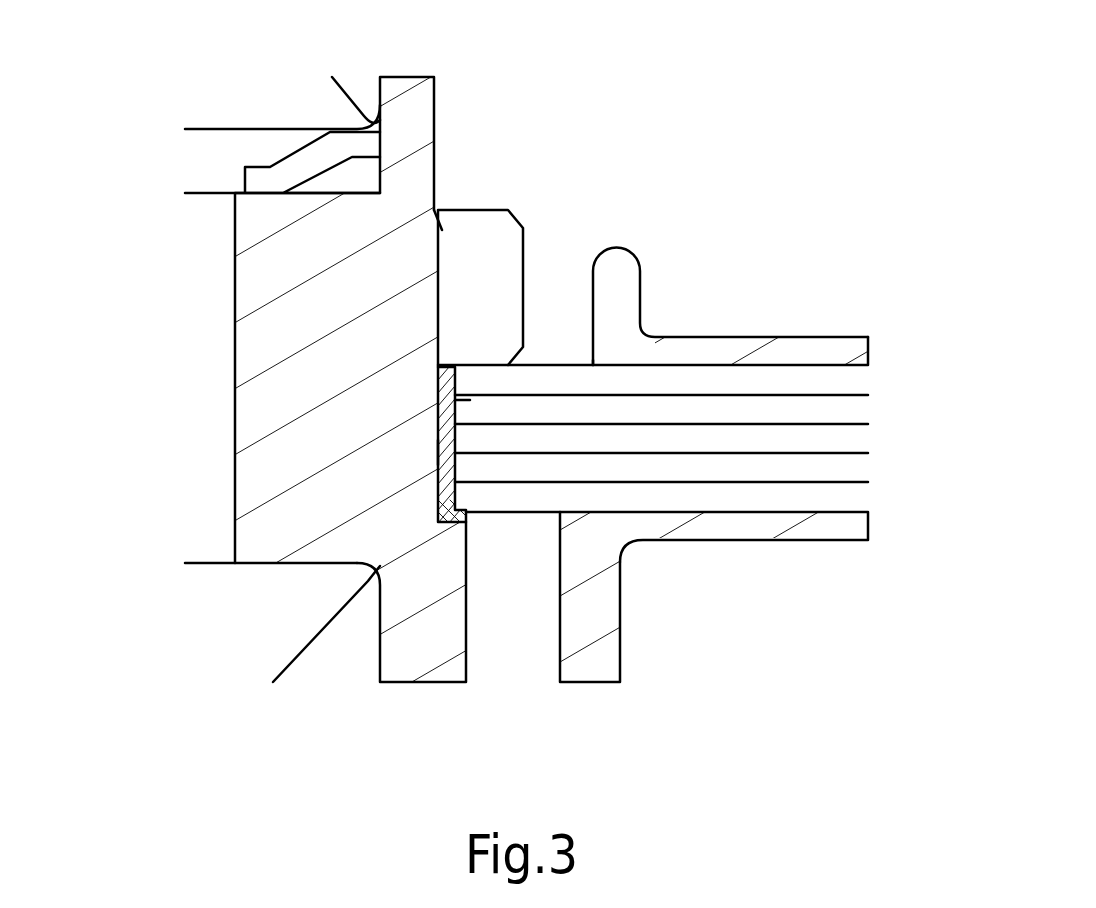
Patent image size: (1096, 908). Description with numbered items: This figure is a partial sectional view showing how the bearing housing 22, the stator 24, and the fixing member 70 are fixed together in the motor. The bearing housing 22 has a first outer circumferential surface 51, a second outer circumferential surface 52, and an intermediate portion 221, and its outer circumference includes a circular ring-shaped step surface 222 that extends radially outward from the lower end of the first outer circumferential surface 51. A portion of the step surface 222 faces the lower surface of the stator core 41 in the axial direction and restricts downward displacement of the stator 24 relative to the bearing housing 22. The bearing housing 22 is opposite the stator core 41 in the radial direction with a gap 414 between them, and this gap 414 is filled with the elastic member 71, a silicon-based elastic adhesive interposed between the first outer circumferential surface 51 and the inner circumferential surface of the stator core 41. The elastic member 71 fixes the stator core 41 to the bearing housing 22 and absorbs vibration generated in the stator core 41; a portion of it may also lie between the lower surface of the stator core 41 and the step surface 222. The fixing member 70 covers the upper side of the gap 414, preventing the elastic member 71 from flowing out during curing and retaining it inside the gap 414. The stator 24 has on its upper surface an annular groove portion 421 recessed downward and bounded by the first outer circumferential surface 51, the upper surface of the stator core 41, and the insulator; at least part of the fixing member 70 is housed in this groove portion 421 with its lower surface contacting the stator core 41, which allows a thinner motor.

The bearing housing 22 is at (423, 647).
The intermediate portion 221 is at (352, 345).
The step surface 222 is at (455, 508).
The stator 24 is at (833, 120).
The stator core 41 is at (688, 465).
The gap 414 is at (420, 460).
The groove portion 421 is at (578, 325).
The first outer circumferential surface 51 is at (455, 402).
The second outer circumferential surface 52 is at (433, 137).
The fixing member 70 is at (487, 270).
The elastic member 71 is at (437, 482).